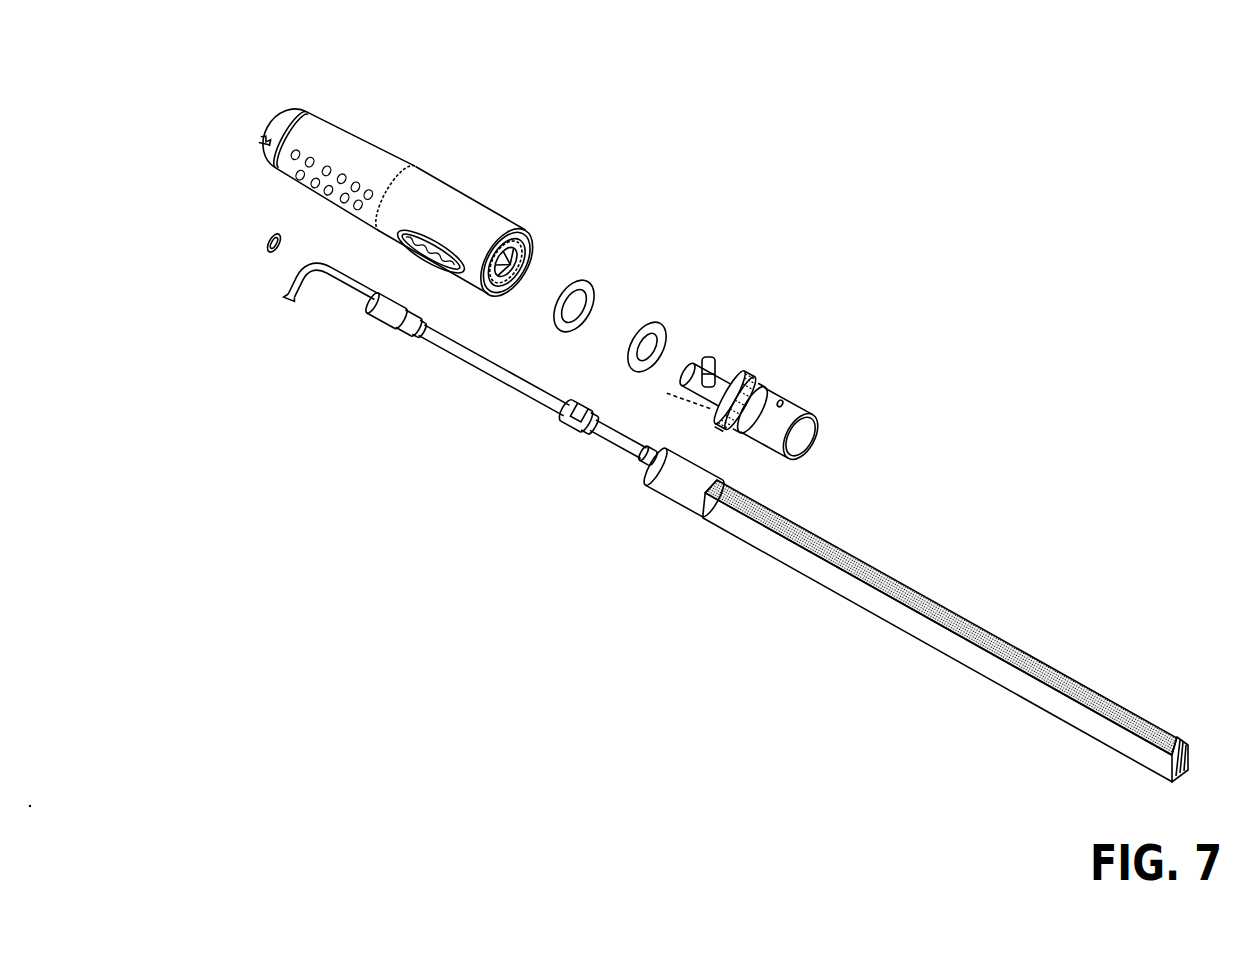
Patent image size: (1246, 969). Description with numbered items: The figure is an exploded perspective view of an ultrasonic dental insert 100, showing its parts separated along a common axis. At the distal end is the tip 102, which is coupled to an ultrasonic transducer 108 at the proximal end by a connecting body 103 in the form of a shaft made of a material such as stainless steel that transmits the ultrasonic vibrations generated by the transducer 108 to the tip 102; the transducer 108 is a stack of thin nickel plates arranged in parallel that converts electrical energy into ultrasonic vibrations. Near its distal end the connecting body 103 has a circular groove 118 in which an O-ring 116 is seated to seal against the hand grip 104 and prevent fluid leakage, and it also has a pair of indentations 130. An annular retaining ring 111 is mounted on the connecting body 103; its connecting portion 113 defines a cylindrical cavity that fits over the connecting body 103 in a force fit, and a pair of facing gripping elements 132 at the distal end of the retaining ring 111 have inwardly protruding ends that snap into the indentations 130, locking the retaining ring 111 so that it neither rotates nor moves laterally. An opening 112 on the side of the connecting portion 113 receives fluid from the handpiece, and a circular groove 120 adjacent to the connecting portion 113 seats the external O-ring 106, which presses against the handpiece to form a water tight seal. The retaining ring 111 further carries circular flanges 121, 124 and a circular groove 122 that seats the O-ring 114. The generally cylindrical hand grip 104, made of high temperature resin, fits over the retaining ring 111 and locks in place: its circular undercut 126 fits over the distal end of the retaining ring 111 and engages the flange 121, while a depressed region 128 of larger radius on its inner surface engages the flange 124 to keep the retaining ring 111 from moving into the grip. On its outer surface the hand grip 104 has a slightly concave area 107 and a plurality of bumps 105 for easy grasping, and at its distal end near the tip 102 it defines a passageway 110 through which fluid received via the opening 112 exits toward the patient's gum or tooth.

The ultrasonic dental insert 100 is at (766, 206).
The tip 102 is at (292, 296).
The connecting body 103 is at (677, 488).
The hand grip 104 is at (402, 165).
The bumps 105 is at (296, 174).
The O-ring 106 is at (661, 325).
The slightly concave area 107 is at (352, 134).
The ultrasonic transducer 108 is at (1012, 645).
The passageway 110 is at (262, 138).
The retaining ring 111 is at (767, 392).
The opening 112 is at (810, 413).
The connecting portion 113 is at (775, 426).
The O-ring 114 is at (577, 280).
The O-ring 116 is at (266, 250).
The circular groove 118 is at (404, 325).
The circular groove 120 is at (781, 399).
The circular flange 121 is at (848, 487).
The circular groove 122 is at (746, 380).
The circular flange 124 is at (848, 487).
The undercut 126 is at (514, 250).
The depressed region 128 is at (508, 245).
The indentations 130 is at (575, 423).
The gripping elements 132 is at (708, 359).